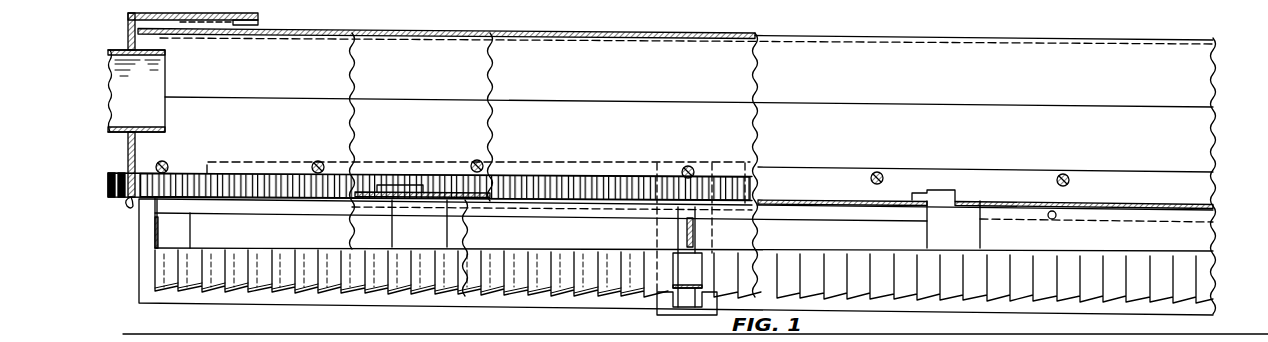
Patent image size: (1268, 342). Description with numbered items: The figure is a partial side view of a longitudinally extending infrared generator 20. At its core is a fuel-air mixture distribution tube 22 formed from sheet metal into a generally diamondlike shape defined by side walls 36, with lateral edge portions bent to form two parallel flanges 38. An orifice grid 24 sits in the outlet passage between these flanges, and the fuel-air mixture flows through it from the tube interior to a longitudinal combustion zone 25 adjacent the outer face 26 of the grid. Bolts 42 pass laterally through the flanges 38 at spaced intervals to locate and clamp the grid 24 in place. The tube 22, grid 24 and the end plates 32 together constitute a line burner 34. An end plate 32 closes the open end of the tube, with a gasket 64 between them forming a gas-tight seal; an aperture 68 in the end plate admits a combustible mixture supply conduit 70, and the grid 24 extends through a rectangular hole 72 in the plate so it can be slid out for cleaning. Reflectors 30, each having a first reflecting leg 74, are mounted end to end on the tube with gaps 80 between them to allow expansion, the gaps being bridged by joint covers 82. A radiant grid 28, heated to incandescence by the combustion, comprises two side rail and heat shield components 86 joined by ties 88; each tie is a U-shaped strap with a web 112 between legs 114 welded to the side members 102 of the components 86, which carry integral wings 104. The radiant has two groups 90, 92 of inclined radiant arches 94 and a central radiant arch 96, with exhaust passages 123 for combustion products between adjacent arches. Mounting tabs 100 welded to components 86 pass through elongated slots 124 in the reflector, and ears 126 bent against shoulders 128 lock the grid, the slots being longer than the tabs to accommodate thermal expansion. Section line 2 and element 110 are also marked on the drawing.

The infrared generator 20 is at (1219, 76).
The fuel-air mixture distribution tube 22 is at (1000, 81).
The orifice grid 24 is at (194, 172).
The combustion zone 25 is at (492, 273).
The outer face of the grid 26 is at (555, 210).
The radiant grid 28 is at (283, 295).
The reflector 30 is at (946, 309).
The end plate 32 is at (154, 9).
The line burner 34 is at (1220, 116).
The side wall 36 is at (1207, 92).
The flange 38 is at (1207, 184).
The bolt 42 is at (1058, 172).
The gasket 64 is at (136, 143).
The aperture 68 is at (132, 50).
The combustible mixture supply conduit 70 is at (167, 78).
The rectangular hole 72 is at (126, 208).
The first reflecting leg 74 is at (998, 314).
The gap 80 is at (646, 306).
The joint cover 82 is at (691, 311).
The side rail and heat shield 86 is at (822, 214).
The tie 88 is at (192, 240).
The group of inclined radiant arches 90 is at (376, 295).
The group of inclined radiant arches 92 is at (897, 308).
The radiant arch 94 is at (234, 290).
The central radiant arch 96 is at (698, 268).
The mounting tab 100 is at (437, 235).
The side member 102 is at (1092, 248).
The wing 104 is at (1032, 246).
The stop 110 is at (1060, 225).
The web 112 is at (720, 226).
The leg 114 is at (720, 239).
The exhaust passage 123 is at (508, 294).
The elongated slot 124 is at (382, 204).
The ear 126 is at (378, 185).
The shoulder 128 is at (428, 185).
The section line 2 is at (458, 47).